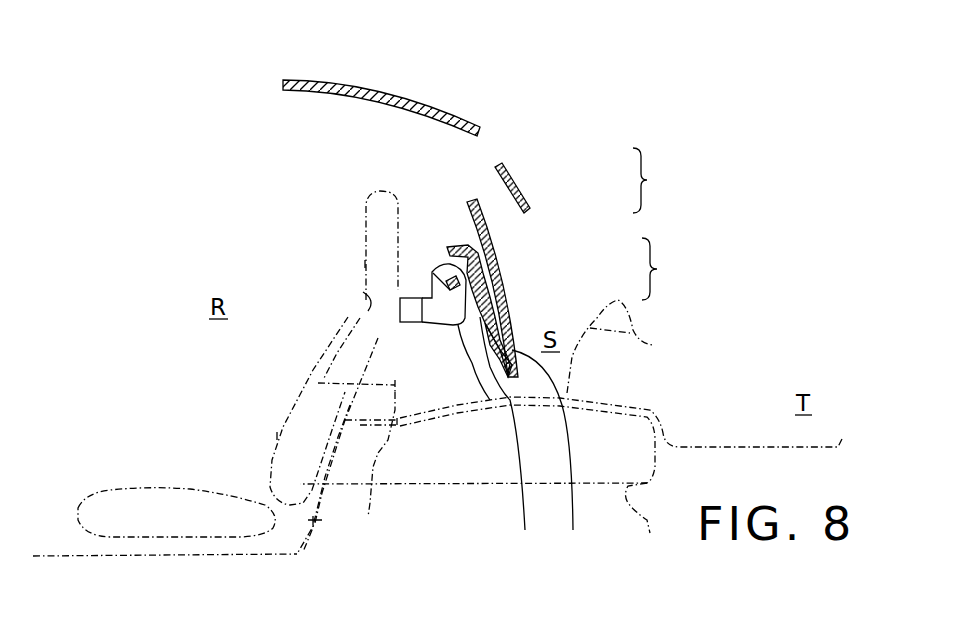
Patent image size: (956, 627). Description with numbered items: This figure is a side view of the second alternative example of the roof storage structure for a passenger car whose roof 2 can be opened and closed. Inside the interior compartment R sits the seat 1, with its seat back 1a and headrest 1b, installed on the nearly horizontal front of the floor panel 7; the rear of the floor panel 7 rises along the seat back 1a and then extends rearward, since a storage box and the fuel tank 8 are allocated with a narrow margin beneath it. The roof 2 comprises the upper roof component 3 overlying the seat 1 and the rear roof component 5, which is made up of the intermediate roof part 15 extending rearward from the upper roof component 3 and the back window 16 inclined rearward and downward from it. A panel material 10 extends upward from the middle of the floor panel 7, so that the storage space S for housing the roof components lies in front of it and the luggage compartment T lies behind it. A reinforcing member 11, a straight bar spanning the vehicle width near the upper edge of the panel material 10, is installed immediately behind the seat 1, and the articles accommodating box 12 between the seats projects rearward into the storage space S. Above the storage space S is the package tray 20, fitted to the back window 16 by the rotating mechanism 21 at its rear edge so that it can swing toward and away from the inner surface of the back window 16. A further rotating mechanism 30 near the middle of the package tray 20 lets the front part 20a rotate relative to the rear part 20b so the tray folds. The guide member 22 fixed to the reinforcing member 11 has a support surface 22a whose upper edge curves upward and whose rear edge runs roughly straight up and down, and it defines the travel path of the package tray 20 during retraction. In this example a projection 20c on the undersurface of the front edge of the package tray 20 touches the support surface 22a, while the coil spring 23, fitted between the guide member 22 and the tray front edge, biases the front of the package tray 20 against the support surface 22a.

The seat 1 is at (364, 208).
The seat back 1a is at (275, 437).
The headrest 1b is at (363, 264).
The roof 2 is at (531, 131).
The upper roof component 3 is at (425, 102).
The rear roof component 5 is at (657, 180).
The floor panel 7 is at (328, 530).
The fuel tank 8 is at (643, 526).
The panel material 10 is at (655, 344).
The reinforcing member 11 is at (400, 315).
The articles accommodating box 12 is at (373, 475).
The intermediate roof part 15 is at (513, 183).
The back window 16 is at (508, 250).
The package tray 20 is at (675, 269).
The front part 20a is at (505, 288).
The rear part 20b is at (505, 325).
The projection 20c is at (458, 242).
The rotating mechanism 21 is at (549, 455).
The guide member 22 is at (442, 308).
The support surface 22a is at (473, 363).
The coil spring 23 is at (433, 268).
The rotating mechanism 30 is at (511, 438).